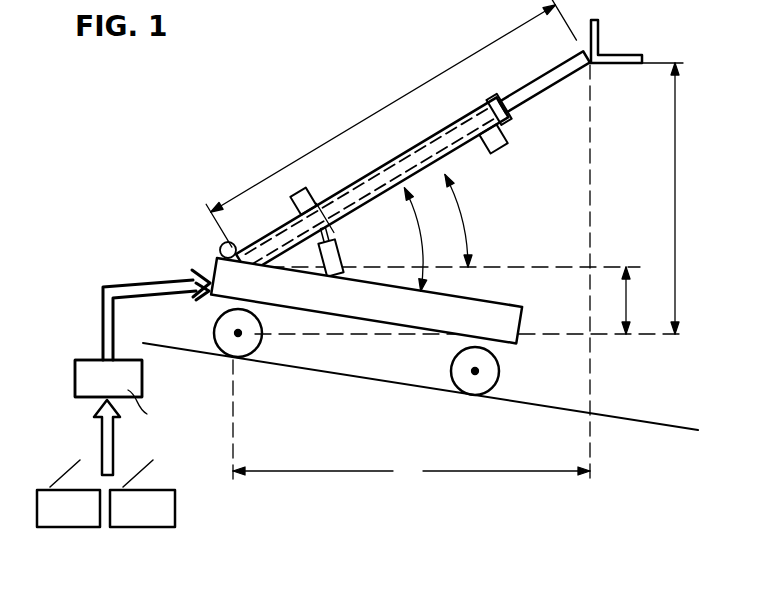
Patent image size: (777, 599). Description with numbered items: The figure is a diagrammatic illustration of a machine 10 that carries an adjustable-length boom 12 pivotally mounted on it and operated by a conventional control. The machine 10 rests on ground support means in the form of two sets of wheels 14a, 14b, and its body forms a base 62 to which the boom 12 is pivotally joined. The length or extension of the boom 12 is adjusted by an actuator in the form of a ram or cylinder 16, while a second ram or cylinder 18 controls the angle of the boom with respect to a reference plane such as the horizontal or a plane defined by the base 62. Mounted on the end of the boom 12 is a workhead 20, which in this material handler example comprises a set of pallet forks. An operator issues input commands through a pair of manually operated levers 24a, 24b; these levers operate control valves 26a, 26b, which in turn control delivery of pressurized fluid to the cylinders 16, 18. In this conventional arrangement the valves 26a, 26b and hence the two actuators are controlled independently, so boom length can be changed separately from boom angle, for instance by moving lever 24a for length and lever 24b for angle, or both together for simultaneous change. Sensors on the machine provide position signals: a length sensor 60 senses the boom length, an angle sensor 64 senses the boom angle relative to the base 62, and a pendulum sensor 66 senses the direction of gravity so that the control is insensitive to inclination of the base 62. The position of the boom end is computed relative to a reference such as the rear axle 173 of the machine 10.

The machine 10 is at (256, 118).
The boom 12 is at (446, 149).
The wheels 14a is at (215, 330).
The wheels 14b is at (490, 383).
The cylinder 16 is at (323, 198).
The cylinder 18 is at (337, 258).
The workhead 20 is at (597, 22).
The lever 24a is at (55, 518).
The lever 24b is at (160, 520).
The control valve 26a is at (86, 370).
The control valve 26b is at (108, 378).
The length sensor 60 is at (498, 147).
The base 62 is at (441, 332).
The angle sensor 64 is at (233, 243).
The pendulum sensor 66 is at (312, 198).
The rear axle 173 is at (245, 337).